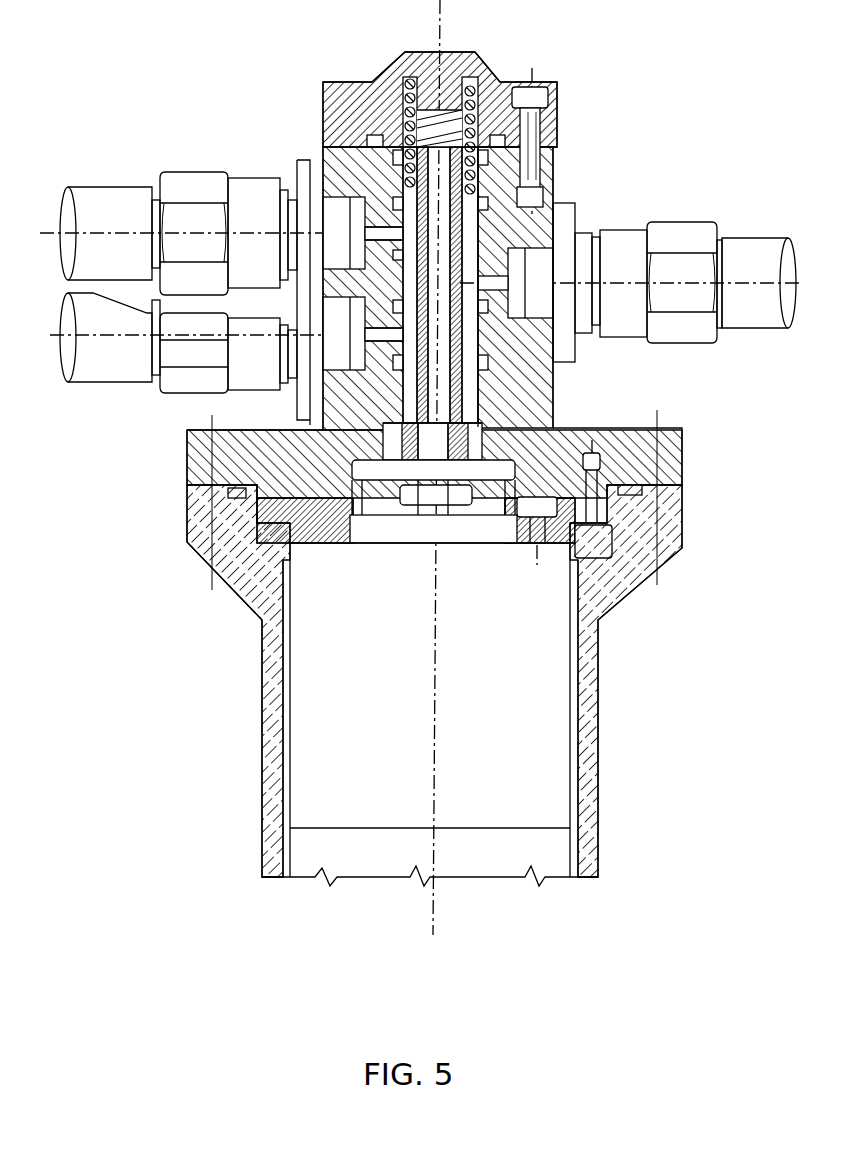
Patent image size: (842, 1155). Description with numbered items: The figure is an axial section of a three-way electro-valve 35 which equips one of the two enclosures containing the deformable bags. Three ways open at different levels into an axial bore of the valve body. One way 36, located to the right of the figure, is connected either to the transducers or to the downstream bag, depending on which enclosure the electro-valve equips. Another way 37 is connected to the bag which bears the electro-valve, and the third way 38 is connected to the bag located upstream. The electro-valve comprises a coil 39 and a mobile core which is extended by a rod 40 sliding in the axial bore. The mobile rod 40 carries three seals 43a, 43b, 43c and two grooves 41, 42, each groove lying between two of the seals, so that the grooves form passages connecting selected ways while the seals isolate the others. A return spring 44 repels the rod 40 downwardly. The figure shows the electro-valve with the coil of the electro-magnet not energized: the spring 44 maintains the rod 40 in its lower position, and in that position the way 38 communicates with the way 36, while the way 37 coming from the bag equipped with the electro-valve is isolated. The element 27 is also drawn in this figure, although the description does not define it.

The compression spring 27 is at (400, 235).
The three-way electro-valve 35 is at (318, 105).
The way 36 is at (517, 290).
The way 37 is at (100, 365).
The way 38 is at (100, 215).
The coil 39 is at (505, 752).
The rod 40 is at (500, 232).
The groove 41 is at (490, 380).
The groove 42 is at (457, 258).
The seal 43a is at (397, 197).
The seal 43b is at (325, 298).
The seal 43c is at (398, 392).
The return spring 44 is at (497, 72).